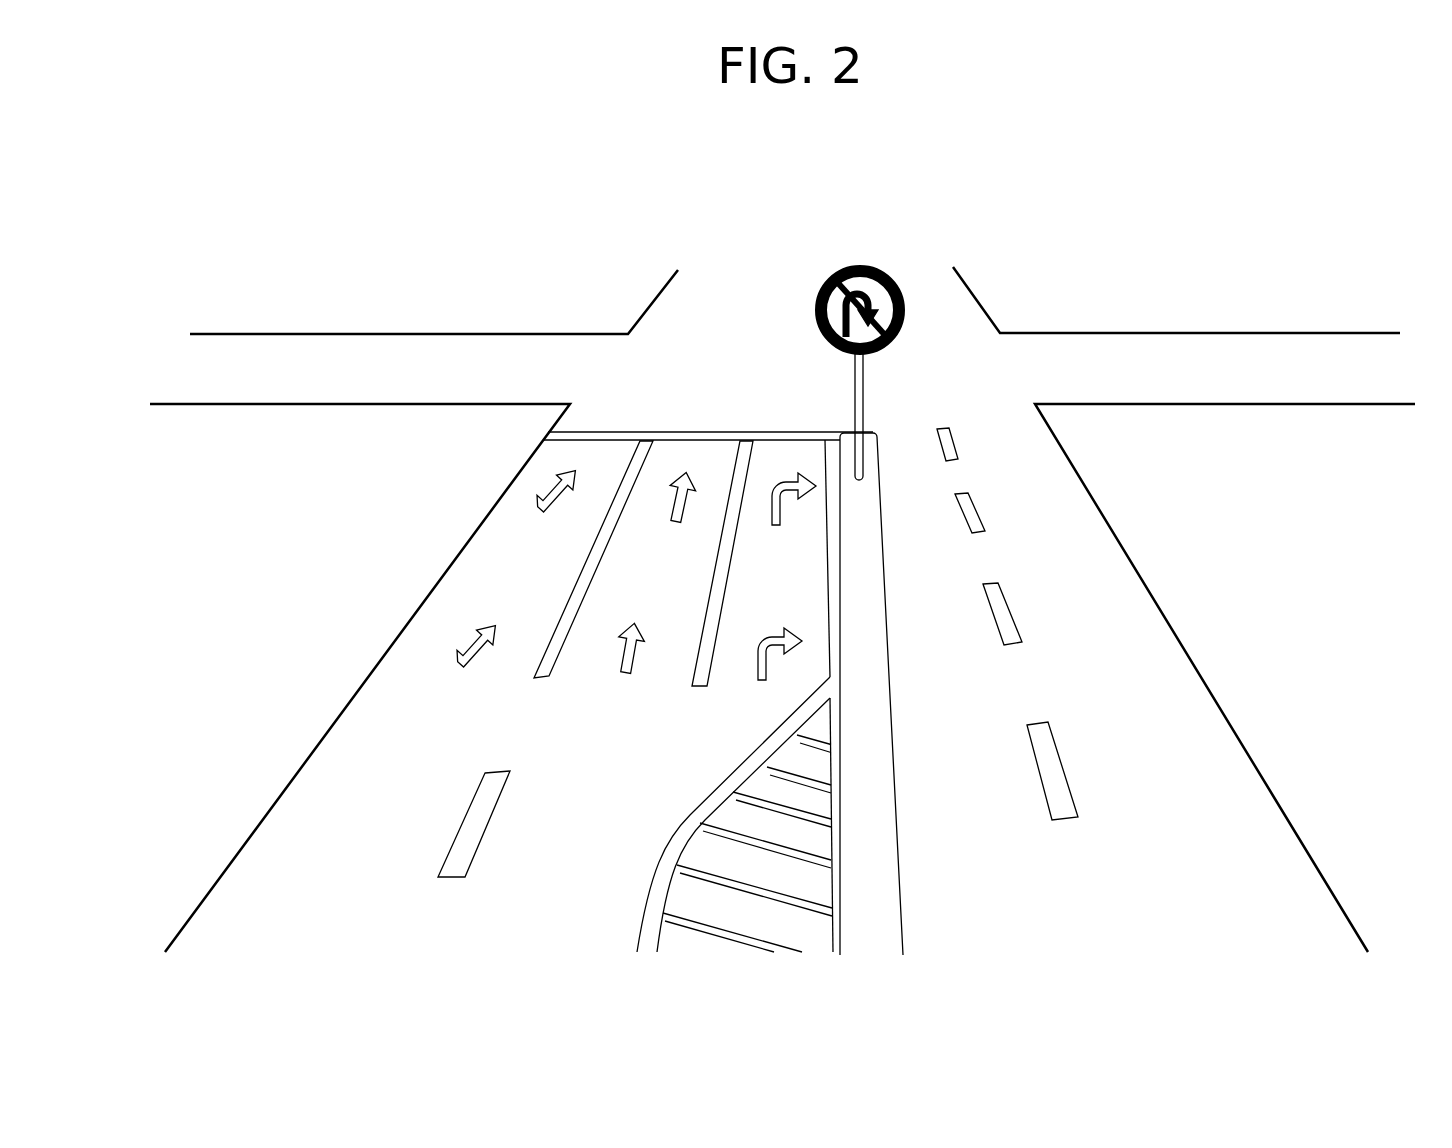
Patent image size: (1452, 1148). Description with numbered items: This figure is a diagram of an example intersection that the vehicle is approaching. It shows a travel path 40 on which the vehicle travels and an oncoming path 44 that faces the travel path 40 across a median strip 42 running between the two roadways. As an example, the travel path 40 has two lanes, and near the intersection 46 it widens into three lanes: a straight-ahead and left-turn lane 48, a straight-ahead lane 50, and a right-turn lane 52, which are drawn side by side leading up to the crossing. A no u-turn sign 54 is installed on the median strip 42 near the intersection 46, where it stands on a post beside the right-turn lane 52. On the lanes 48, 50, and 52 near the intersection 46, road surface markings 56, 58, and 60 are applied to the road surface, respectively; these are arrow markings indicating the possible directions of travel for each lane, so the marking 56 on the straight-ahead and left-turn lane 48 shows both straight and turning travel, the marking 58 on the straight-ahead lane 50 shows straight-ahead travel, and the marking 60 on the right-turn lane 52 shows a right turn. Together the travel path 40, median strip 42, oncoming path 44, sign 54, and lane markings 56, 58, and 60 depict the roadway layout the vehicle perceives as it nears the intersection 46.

The travel path 40 is at (405, 910).
The median strip 42 is at (865, 492).
The oncoming path 44 is at (1087, 853).
The intersection 46 is at (765, 385).
The straight-ahead and left-turn lane 48 is at (488, 562).
The straight-ahead lane 50 is at (660, 592).
The right-turn lane 52 is at (785, 583).
The no u-turn sign 54 is at (875, 264).
The road surface marking 56 is at (540, 493).
The road surface marking 58 is at (673, 503).
The road surface marking 60 is at (790, 505).